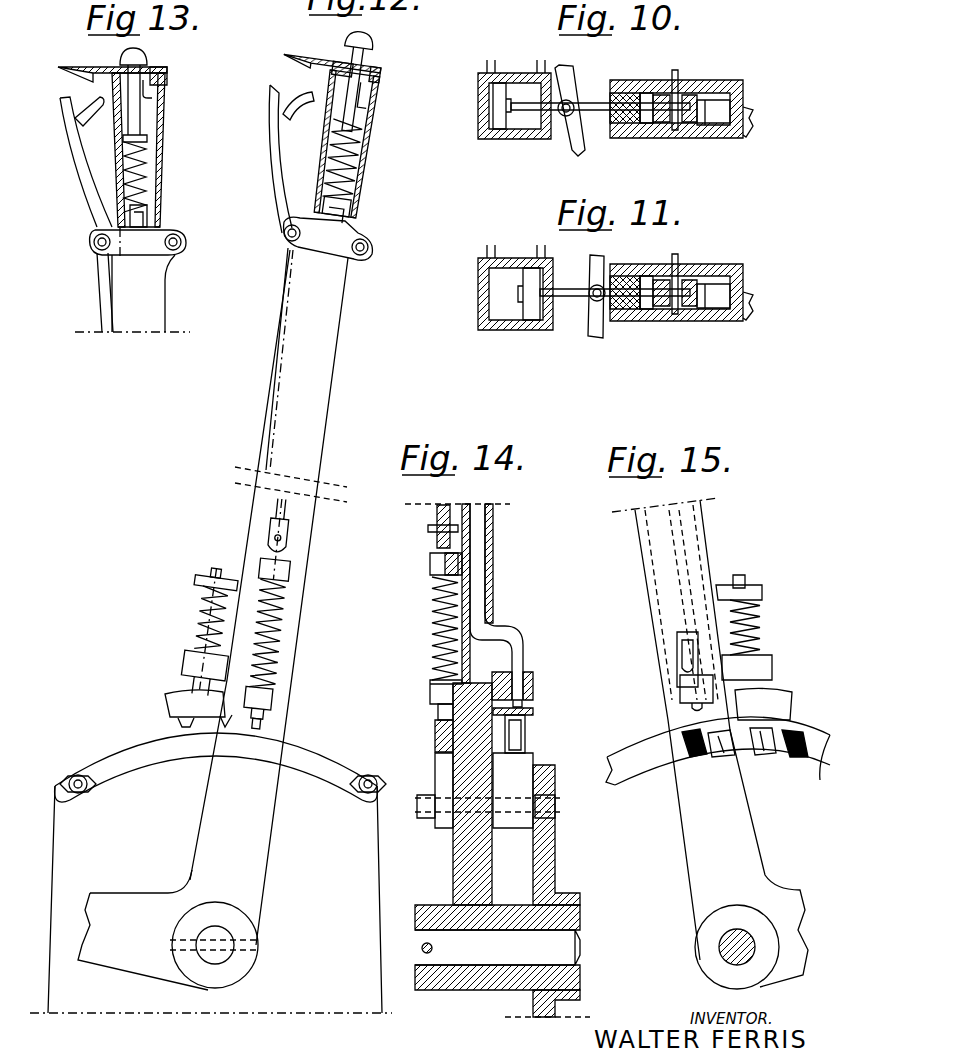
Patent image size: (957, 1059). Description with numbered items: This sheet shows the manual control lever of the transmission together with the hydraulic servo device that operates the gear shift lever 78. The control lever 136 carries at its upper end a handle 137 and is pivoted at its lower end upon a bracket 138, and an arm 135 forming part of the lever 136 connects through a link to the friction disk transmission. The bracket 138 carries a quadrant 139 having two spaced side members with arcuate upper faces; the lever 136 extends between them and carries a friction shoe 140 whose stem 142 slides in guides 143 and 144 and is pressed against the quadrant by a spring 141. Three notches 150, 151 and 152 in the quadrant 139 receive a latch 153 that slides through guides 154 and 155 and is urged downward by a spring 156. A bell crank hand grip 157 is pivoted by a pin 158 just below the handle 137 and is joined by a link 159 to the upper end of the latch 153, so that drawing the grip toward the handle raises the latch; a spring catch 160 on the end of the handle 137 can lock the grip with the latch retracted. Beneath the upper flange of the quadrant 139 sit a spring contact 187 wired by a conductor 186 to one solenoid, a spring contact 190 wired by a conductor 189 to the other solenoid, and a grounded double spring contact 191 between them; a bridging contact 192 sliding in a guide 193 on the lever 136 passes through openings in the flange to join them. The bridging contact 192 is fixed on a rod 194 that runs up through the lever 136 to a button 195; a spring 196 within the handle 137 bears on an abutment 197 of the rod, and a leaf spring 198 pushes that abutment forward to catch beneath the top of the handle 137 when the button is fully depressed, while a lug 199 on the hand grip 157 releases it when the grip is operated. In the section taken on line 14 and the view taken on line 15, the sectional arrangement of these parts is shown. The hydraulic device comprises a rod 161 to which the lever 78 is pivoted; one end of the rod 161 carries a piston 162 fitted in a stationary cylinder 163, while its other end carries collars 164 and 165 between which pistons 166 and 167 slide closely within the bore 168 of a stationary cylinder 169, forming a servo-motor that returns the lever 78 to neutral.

In FIG. 12, the section line 14— 14 is at (246, 505).
In FIG. 14, the section line 15— 15 is at (503, 492).
In FIG. 10, the gear shift lever 78 is at (566, 142).
In FIG. 11, the gear shift lever 78 is at (592, 330).
In FIG. 12, the arm 135 is at (115, 905).
In FIG. 13, the control lever 136 is at (158, 290).
In FIG. 12, the control lever 136 is at (335, 299).
In FIG. 14, the control lever 136 is at (495, 543).
In FIG. 15, the control lever 136 is at (655, 580).
In FIG. 13, the handle 137 is at (160, 138).
In FIG. 12, the handle 137 is at (356, 150).
In FIG. 12, the bracket 138 is at (211, 899).
In FIG. 14, the bracket 138 is at (555, 861).
In FIG. 12, the quadrant 139 is at (112, 754).
In FIG. 14, the quadrant 139 is at (440, 769).
In FIG. 15, the quadrant 139 is at (626, 782).
In FIG. 12, the friction shoe 140 is at (168, 698).
In FIG. 15, the friction shoe 140 is at (770, 705).
In FIG. 12, the spring 141 is at (192, 605).
In FIG. 15, the spring 141 is at (757, 612).
In FIG. 12, the stem 142 is at (203, 568).
In FIG. 15, the stem 142 is at (740, 575).
In FIG. 12, the guide 143 is at (183, 582).
In FIG. 15, the guide 143 is at (762, 592).
In FIG. 12, the guide 144 is at (183, 668).
In FIG. 15, the guide 144 is at (772, 668).
In FIG. 12, the notch 150 is at (265, 735).
In FIG. 14, the notch 150 is at (437, 737).
In FIG. 12, the notch 151 is at (228, 724).
In FIG. 12, the notch 152 is at (185, 727).
In FIG. 12, the latch 153 is at (268, 548).
In FIG. 14, the latch 153 is at (438, 715).
In FIG. 12, the guide 154 is at (277, 569).
In FIG. 14, the guide 154 is at (430, 565).
In FIG. 12, the guide 155 is at (273, 698).
In FIG. 14, the guide 155 is at (430, 691).
In FIG. 12, the spring 156 is at (272, 602).
In FIG. 14, the spring 156 is at (432, 599).
In FIG. 13, the bell crank hand grip 157 is at (84, 173).
In FIG. 12, the bell crank hand grip 157 is at (284, 172).
In FIG. 13, the pin 158 is at (181, 242).
In FIG. 12, the pin 158 is at (368, 246).
In FIG. 13, the link 159 is at (100, 280).
In FIG. 12, the link 159 is at (285, 272).
In FIG. 14, the link 159 is at (436, 510).
In FIG. 13, the spring catch 160 is at (95, 67).
In FIG. 12, the spring catch 160 is at (300, 63).
In FIG. 10, the rod 161 is at (590, 105).
In FIG. 11, the rod 161 is at (578, 292).
In FIG. 10, the piston 162 is at (498, 125).
In FIG. 11, the piston 162 is at (528, 310).
In FIG. 10, the stationary cylinder 163 is at (480, 118).
In FIG. 11, the stationary cylinder 163 is at (480, 304).
In FIG. 10, the collar 164 is at (646, 93).
In FIG. 11, the collar 164 is at (660, 276).
In FIG. 10, the collar 165 is at (700, 95).
In FIG. 11, the collar 165 is at (712, 276).
In FIG. 10, the piston 166 is at (660, 124).
In FIG. 11, the piston 166 is at (665, 310).
In FIG. 10, the piston 167 is at (690, 124).
In FIG. 11, the piston 167 is at (708, 310).
In FIG. 10, the bore 168 is at (672, 124).
In FIG. 11, the bore 168 is at (680, 310).
In FIG. 10, the stationary cylinder 169 is at (743, 128).
In FIG. 11, the stationary cylinder 169 is at (743, 275).
In FIG. 15, the conductor 186 is at (688, 762).
In FIG. 14, the spring contact 187 is at (525, 740).
In FIG. 15, the spring contact 187 is at (718, 760).
In FIG. 15, the conductor 189 is at (800, 785).
In FIG. 15, the spring contact 190 is at (795, 760).
In FIG. 15, the double spring contact 191 is at (756, 758).
In FIG. 14, the bridging contact 192 is at (522, 704).
In FIG. 15, the bridging contact 192 is at (690, 714).
In FIG. 14, the guide 193 is at (533, 678).
In FIG. 15, the guide 193 is at (678, 678).
In FIG. 13, the rod 194 is at (150, 204).
In FIG. 12, the rod 194 is at (349, 170).
In FIG. 14, the rod 194 is at (480, 595).
In FIG. 15, the rod 194 is at (670, 532).
In FIG. 13, the button 195 is at (146, 58).
In FIG. 12, the button 195 is at (349, 40).
In FIG. 13, the spring 196 is at (145, 164).
In FIG. 12, the spring 196 is at (345, 185).
In FIG. 13, the abutment 197 is at (140, 111).
In FIG. 12, the abutment 197 is at (340, 70).
In FIG. 13, the leaf spring 198 is at (152, 89).
In FIG. 12, the leaf spring 198 is at (352, 98).
In FIG. 13, the lug 199 is at (84, 110).
In FIG. 12, the lug 199 is at (294, 96).